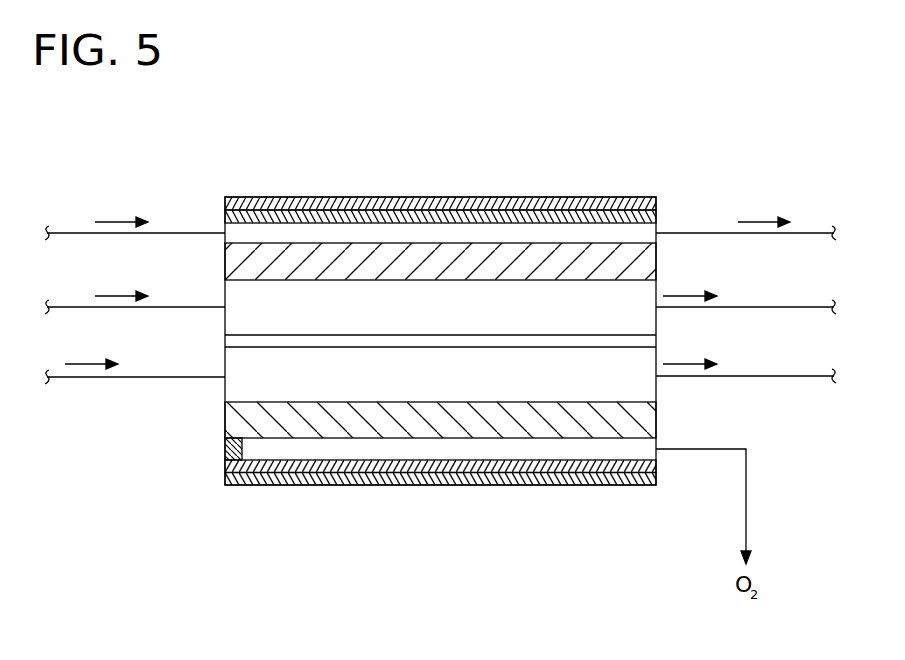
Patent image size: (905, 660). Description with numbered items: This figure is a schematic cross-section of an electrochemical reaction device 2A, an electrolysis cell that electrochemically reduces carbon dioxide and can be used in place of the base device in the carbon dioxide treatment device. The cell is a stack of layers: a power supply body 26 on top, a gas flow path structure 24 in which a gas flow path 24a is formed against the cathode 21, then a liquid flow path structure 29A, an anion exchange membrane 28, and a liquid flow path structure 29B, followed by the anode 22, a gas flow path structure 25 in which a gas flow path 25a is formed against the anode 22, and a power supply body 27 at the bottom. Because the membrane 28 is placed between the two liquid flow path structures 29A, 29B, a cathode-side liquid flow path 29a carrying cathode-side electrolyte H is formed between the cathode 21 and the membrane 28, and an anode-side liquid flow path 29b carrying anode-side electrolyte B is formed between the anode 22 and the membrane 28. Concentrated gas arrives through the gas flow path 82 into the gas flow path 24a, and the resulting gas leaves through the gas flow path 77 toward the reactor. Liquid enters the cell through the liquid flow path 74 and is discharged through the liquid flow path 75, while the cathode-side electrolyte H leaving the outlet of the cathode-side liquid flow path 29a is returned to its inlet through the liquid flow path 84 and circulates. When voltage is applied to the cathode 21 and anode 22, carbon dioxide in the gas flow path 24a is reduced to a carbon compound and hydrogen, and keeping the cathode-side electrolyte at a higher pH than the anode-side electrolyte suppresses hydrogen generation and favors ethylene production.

The electrochemical reaction device 2A is at (569, 157).
The power supply body 26 is at (502, 197).
The gas flow path structure 24 is at (656, 228).
The gas flow path 24a is at (363, 222).
The cathode 21 is at (656, 268).
The cathode-side liquid flow path 29a is at (262, 262).
The liquid flow path structure 29A is at (225, 295).
The anion exchange membrane 28 is at (225, 340).
The liquid flow path structure 29B is at (225, 388).
The anode 22 is at (656, 420).
The anode-side liquid flow path 29b is at (265, 402).
The gas flow path structure 25 is at (656, 458).
The gas flow path 25a is at (367, 459).
The power supply body 27 is at (462, 485).
The gas flow path 82 is at (67, 232).
The liquid flow path 84 is at (67, 306).
The liquid flow path 74 is at (62, 378).
The gas flow path 77 is at (817, 232).
The liquid flow path 75 is at (790, 375).